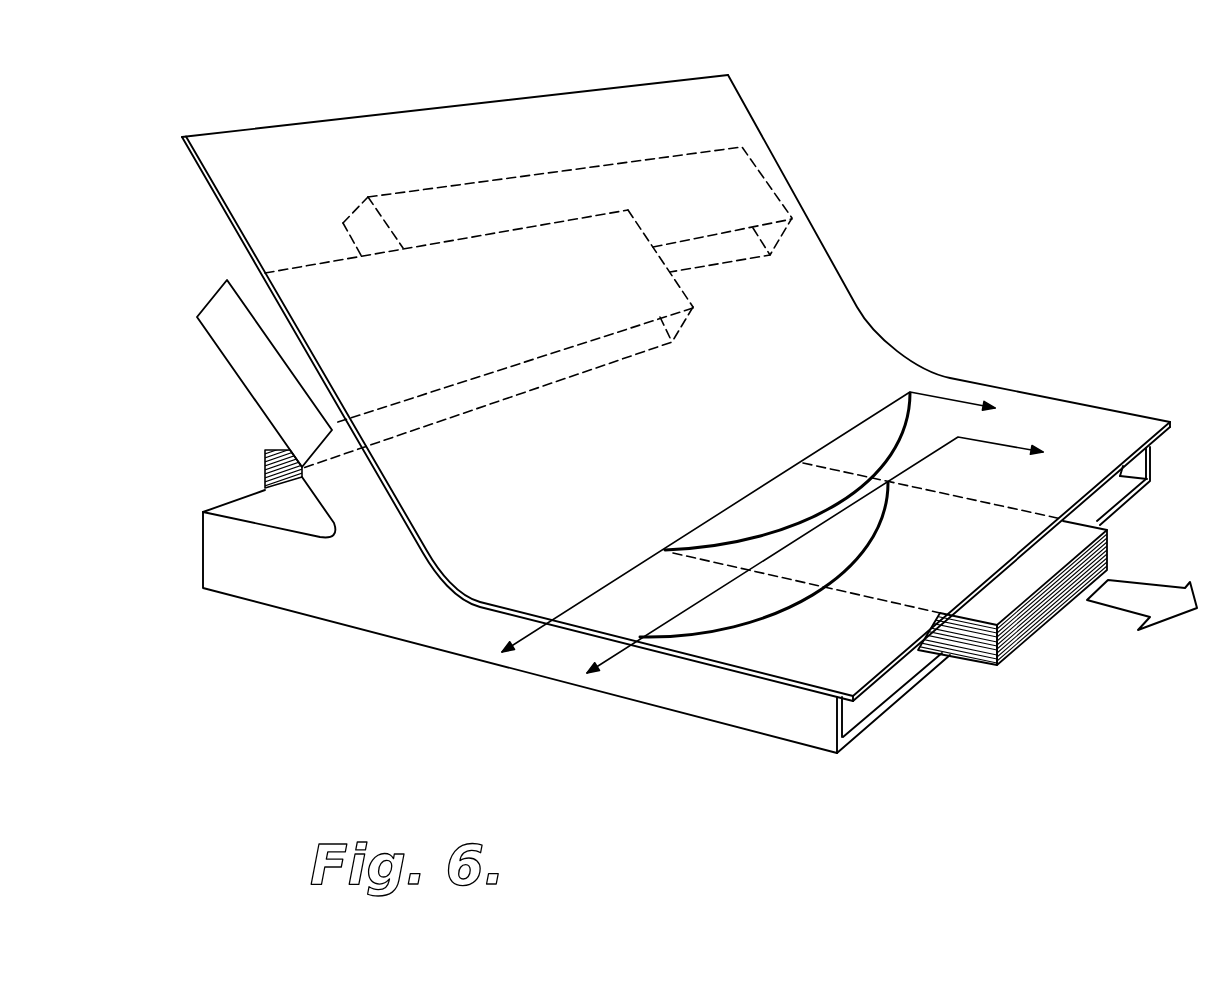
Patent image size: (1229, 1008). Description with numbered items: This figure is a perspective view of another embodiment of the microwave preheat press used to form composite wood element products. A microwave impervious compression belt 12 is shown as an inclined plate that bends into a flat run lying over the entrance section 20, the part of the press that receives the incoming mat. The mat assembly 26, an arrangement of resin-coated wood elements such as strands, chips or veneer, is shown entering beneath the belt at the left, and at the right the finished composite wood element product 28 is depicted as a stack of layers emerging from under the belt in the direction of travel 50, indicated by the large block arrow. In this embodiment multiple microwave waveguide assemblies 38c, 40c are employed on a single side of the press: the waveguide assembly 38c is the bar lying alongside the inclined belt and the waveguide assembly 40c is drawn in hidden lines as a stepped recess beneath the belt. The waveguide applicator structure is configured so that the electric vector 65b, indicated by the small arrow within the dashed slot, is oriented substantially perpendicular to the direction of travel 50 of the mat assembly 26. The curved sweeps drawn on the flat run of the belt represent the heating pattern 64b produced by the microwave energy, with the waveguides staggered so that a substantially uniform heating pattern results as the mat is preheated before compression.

The microwave impervious compression belt 12 is at (852, 331).
The entrance section 20 is at (212, 555).
The mat assembly 26 is at (263, 477).
The composite wood element product 28 is at (1013, 652).
The microwave waveguide assembly 38c is at (222, 308).
The microwave waveguide assembly 40c is at (358, 226).
The direction of travel 50 is at (1115, 608).
The heating pattern 64b is at (888, 483).
The electric vector 65b is at (517, 368).